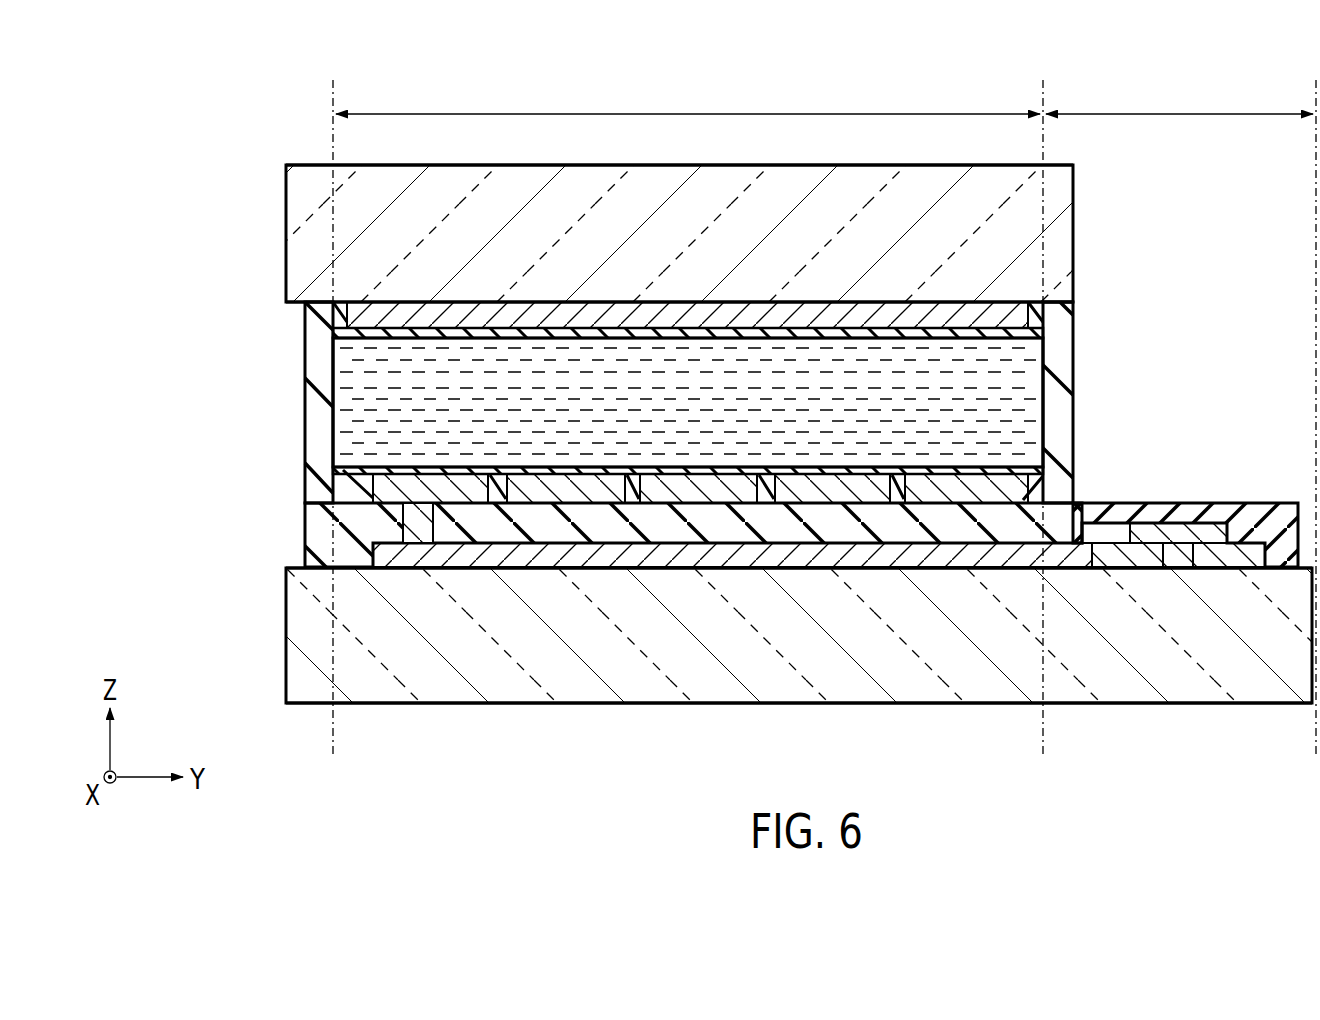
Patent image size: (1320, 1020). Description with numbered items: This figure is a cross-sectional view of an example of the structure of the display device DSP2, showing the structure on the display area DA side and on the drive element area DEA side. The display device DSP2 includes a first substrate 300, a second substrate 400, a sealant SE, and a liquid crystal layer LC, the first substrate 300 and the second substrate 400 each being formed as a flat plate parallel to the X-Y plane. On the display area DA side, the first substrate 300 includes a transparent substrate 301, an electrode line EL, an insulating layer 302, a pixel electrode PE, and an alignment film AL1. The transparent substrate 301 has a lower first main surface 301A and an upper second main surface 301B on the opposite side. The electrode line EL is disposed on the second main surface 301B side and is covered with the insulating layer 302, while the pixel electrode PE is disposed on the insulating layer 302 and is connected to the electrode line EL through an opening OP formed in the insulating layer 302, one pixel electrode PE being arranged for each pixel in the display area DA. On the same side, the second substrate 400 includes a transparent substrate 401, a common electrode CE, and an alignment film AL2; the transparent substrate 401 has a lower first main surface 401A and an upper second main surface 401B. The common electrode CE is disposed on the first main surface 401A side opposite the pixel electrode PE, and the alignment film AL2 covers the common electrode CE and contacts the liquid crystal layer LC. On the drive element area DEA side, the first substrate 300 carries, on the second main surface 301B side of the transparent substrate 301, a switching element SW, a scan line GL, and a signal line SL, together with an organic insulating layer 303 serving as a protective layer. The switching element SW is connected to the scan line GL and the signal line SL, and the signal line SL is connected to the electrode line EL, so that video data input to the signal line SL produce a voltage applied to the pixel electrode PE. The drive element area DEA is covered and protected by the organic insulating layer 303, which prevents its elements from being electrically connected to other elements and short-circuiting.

The display device DSP2 is at (953, 94).
The display area DA is at (688, 94).
The drive element area DEA is at (1179, 94).
The second substrate 400 is at (199, 292).
The transparent substrate 401 is at (305, 241).
The first main surface 401A is at (468, 298).
The second main surface 401B is at (544, 162).
The common electrode CE is at (347, 316).
The alignment film AL2 is at (347, 333).
The liquid crystal layer LC is at (345, 385).
The sealant SE is at (318, 440).
The alignment film AL1 is at (357, 484).
The insulating layer 302 is at (401, 530).
The opening OP is at (375, 546).
The first substrate 300 is at (199, 587).
The transparent substrate 301 is at (287, 645).
The first main surface 301A is at (554, 710).
The second main surface 301B is at (633, 574).
The pixel electrode PE is at (625, 616).
The electrode line EL is at (721, 552).
The signal line SL is at (1137, 548).
The scan line GL is at (1228, 552).
The switching element SW is at (1173, 522).
The organic insulating layer 303 is at (1277, 518).